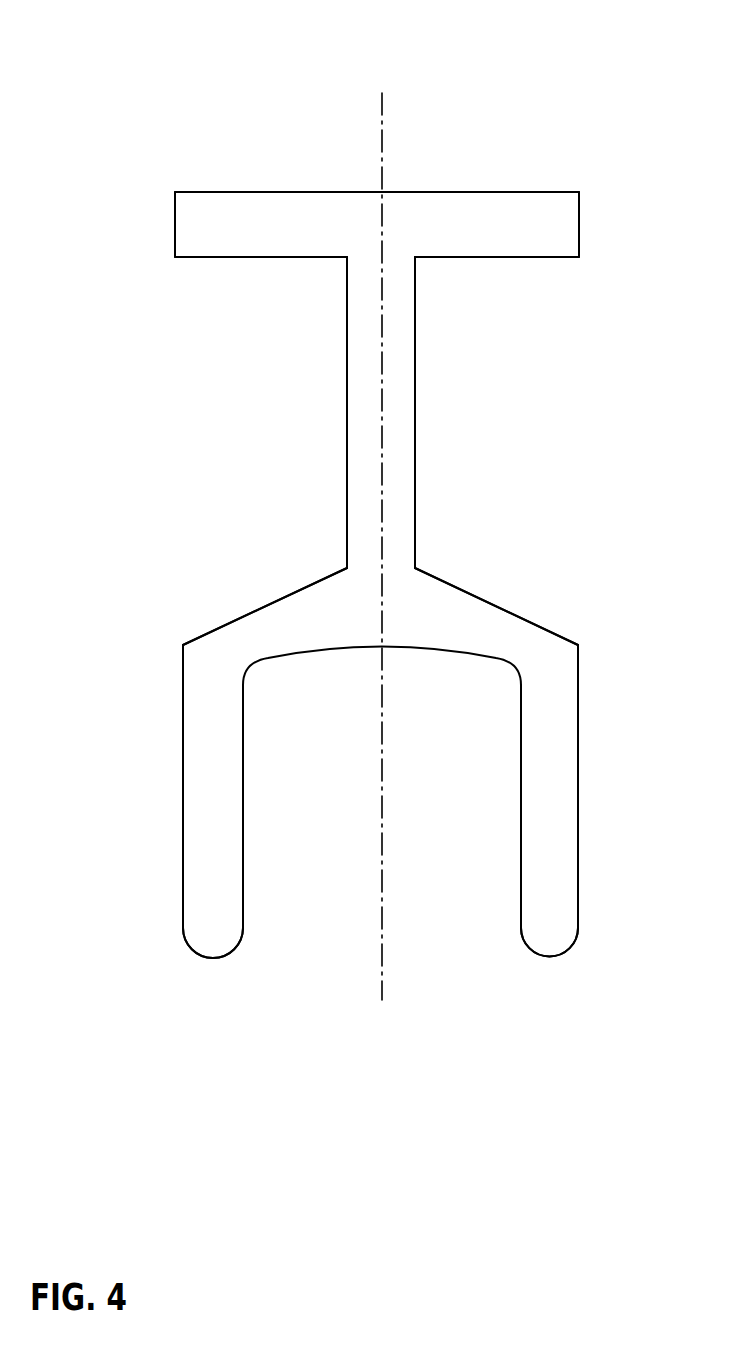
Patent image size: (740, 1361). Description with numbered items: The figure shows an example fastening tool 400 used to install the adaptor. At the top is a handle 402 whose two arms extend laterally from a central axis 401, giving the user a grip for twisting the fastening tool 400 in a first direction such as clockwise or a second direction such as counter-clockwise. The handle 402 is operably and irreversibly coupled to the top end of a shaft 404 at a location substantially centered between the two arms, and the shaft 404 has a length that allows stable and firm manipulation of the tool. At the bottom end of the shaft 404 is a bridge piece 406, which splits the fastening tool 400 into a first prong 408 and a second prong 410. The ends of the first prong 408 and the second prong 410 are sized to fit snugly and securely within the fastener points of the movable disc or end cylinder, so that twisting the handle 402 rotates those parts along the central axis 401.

The fastening tool 400 is at (603, 62).
The central axis 401 is at (383, 120).
The handle 402 is at (541, 192).
The shaft 404 is at (415, 358).
The bridge piece 406 is at (470, 592).
The first prong 408 is at (242, 873).
The second prong 410 is at (579, 868).